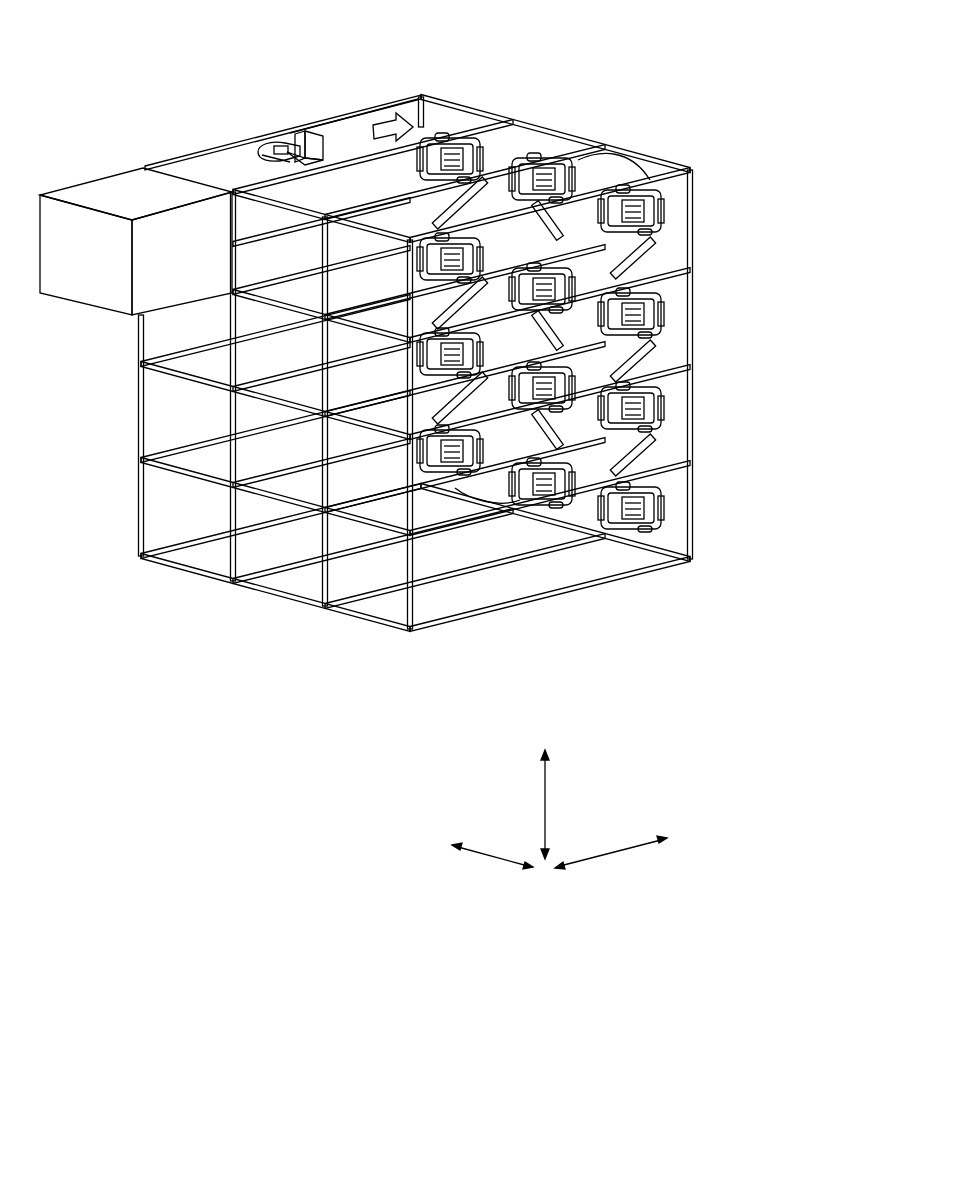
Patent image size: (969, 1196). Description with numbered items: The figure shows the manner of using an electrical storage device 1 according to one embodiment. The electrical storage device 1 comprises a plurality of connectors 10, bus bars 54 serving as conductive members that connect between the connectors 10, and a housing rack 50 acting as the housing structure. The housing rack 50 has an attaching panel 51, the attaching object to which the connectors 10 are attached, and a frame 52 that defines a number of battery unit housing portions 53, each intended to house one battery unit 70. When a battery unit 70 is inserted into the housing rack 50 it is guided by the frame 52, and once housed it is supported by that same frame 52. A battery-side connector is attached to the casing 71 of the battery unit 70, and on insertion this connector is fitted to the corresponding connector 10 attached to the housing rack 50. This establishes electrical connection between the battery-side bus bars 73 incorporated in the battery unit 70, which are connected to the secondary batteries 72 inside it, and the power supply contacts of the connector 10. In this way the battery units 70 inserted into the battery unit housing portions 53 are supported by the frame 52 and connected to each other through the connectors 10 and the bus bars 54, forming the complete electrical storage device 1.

The electrical storage device 1 is at (612, 100).
The connector 10 is at (682, 420).
The housing rack 50 is at (493, 624).
The attaching panel 51 is at (672, 203).
The frame 52 is at (563, 594).
The battery unit housing portion 53 is at (270, 548).
The bus bar 54 is at (668, 256).
The battery unit 70 is at (120, 154).
The casing 71 is at (212, 165).
The battery 72 is at (297, 140).
The battery-side bus bar 73 is at (278, 152).